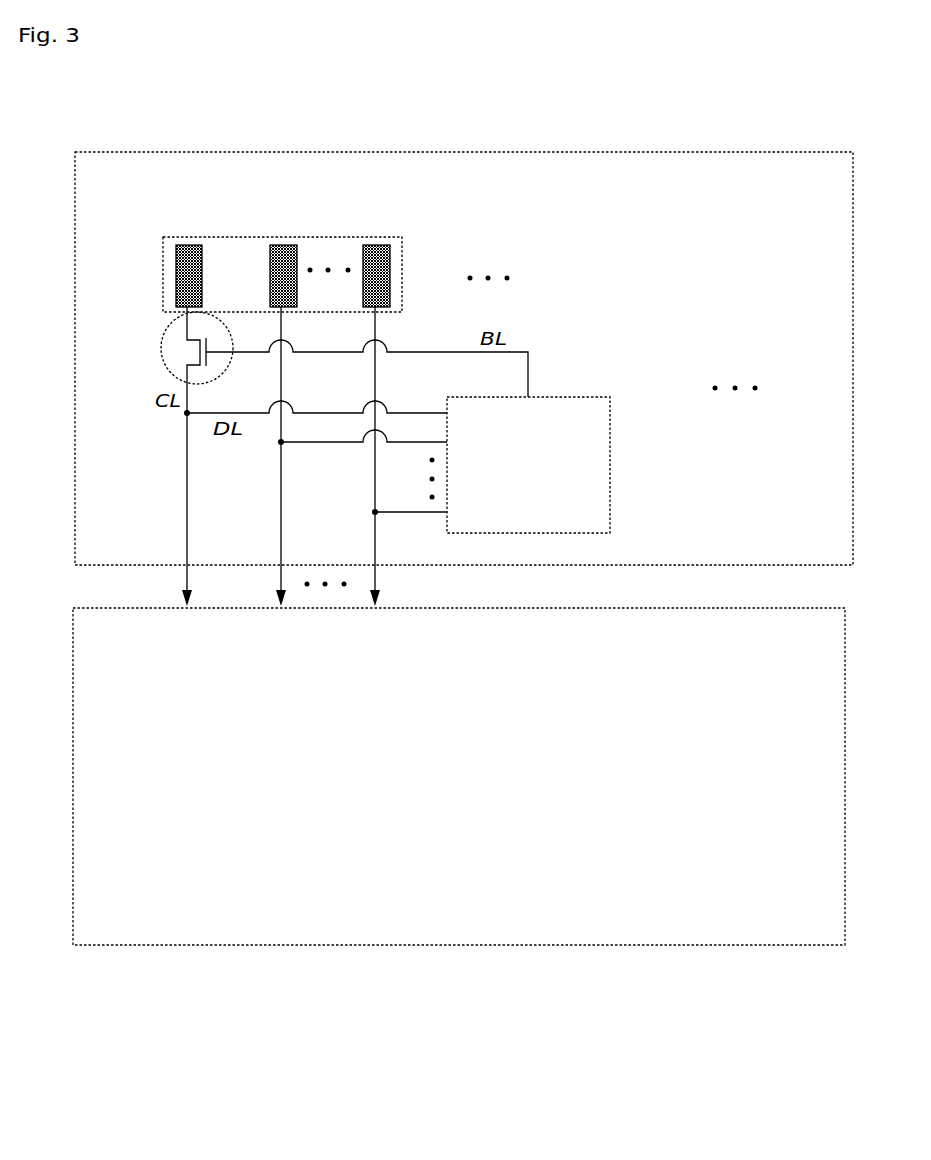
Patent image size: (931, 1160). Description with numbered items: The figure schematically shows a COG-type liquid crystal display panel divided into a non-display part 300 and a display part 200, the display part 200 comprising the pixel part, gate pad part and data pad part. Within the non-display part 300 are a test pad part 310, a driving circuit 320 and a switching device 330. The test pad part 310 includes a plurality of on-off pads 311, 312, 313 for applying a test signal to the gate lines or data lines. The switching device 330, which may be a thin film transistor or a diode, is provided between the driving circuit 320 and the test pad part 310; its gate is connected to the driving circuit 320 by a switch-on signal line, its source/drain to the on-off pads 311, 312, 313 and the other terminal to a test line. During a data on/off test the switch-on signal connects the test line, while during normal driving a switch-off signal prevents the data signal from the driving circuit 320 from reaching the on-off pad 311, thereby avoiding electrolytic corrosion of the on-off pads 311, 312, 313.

The non-display part 300 is at (480, 152).
The display part 200 is at (527, 945).
The test pad part 310 is at (401, 276).
The on-off pad 311 is at (186, 237).
The on-off pad 312 is at (280, 237).
The on-off pad 313 is at (370, 237).
The driving circuit 320 is at (555, 397).
The switching device 330 is at (172, 320).